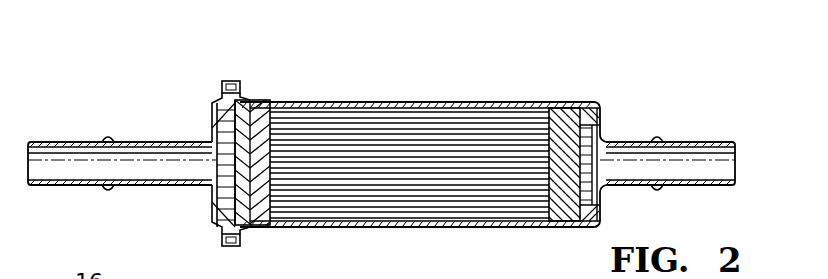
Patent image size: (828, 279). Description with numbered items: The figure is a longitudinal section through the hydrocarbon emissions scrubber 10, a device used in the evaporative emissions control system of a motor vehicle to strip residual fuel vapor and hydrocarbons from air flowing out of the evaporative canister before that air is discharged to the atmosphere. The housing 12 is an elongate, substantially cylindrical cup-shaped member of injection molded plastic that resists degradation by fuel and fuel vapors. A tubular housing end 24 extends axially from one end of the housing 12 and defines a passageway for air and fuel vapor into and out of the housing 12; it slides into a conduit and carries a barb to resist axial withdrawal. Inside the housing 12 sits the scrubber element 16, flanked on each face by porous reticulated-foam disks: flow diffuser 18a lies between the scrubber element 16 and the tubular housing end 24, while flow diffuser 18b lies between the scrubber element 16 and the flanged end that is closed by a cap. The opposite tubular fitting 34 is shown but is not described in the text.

The hydrocarbon emissions scrubber 10 is at (578, 40).
The housing 12 is at (443, 100).
The scrubber element 16 is at (488, 122).
The flow diffuser 18a is at (574, 128).
The flow diffuser 18b is at (264, 122).
The tubular housing end 24 is at (681, 142).
The inlet fitting 34 is at (58, 142).